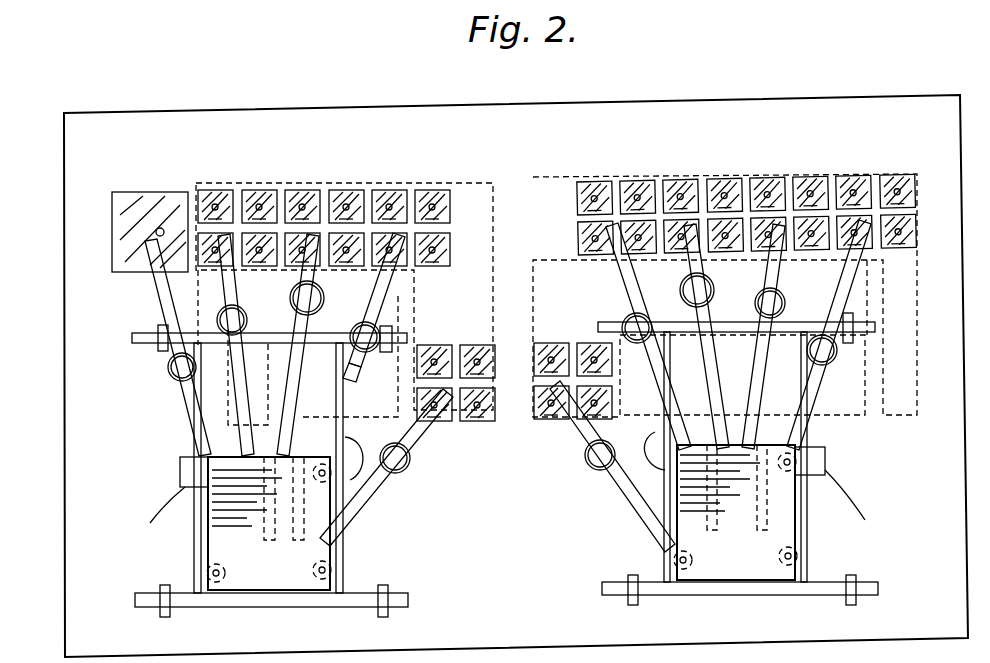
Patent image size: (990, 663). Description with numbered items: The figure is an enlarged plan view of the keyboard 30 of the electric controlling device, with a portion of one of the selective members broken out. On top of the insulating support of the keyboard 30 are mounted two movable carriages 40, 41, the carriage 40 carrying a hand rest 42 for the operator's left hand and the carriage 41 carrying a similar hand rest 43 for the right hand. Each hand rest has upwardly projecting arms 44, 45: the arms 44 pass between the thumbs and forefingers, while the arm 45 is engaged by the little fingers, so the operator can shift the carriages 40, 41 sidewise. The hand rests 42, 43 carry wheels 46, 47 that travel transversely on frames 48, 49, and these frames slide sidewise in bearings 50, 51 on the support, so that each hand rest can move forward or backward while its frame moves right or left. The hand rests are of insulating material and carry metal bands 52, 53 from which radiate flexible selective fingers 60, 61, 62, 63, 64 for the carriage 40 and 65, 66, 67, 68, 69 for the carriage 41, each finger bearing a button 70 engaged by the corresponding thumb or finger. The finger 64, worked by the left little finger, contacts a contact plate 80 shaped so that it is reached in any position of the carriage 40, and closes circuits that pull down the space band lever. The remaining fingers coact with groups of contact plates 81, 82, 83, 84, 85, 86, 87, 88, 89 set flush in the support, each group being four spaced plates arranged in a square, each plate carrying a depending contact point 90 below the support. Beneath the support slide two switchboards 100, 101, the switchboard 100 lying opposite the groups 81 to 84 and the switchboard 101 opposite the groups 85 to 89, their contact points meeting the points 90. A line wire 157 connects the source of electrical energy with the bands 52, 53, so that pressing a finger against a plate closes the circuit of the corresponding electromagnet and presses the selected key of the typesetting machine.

The keyboard 30 is at (64, 414).
The switchboard 100 is at (478, 195).
The switchboard 101 is at (910, 302).
The contact plate 80 is at (118, 244).
The group of contact plates 81 is at (470, 340).
The group of contact plates 82 is at (424, 184).
The group of contact plates 83 is at (336, 185).
The group of contact plates 84 is at (225, 186).
The group of contact plates 85 is at (582, 341).
The group of contact plates 86 is at (632, 176).
The group of contact plates 87 is at (724, 175).
The group of contact plates 88 is at (810, 174).
The group of contact plates 89 is at (894, 172).
The contact point 90 is at (478, 410).
The carriage 40 is at (271, 606).
The carriage 41 is at (740, 594).
The hand rest 42 is at (248, 585).
The hand rest 43 is at (718, 580).
The arm 44 is at (650, 440).
The arm 45 is at (180, 468).
The wheel 46 is at (205, 573).
The wheel 47 is at (358, 455).
The frame 48 is at (266, 335).
The frame 49 is at (728, 320).
The bearing 50 is at (160, 345).
The bearing 51 is at (846, 343).
The metal band 52 is at (240, 430).
The metal band 53 is at (733, 445).
The selective finger 60 is at (380, 470).
The selective finger 61 is at (374, 290).
The selective finger 62 is at (293, 369).
The selective finger 63 is at (224, 285).
The selective finger 64 is at (160, 305).
The selective finger 65 is at (628, 472).
The selective finger 66 is at (630, 298).
The selective finger 67 is at (712, 378).
The selective finger 68 is at (778, 282).
The selective finger 69 is at (854, 280).
The button 70 is at (170, 375).
The line wire 157 is at (172, 490).